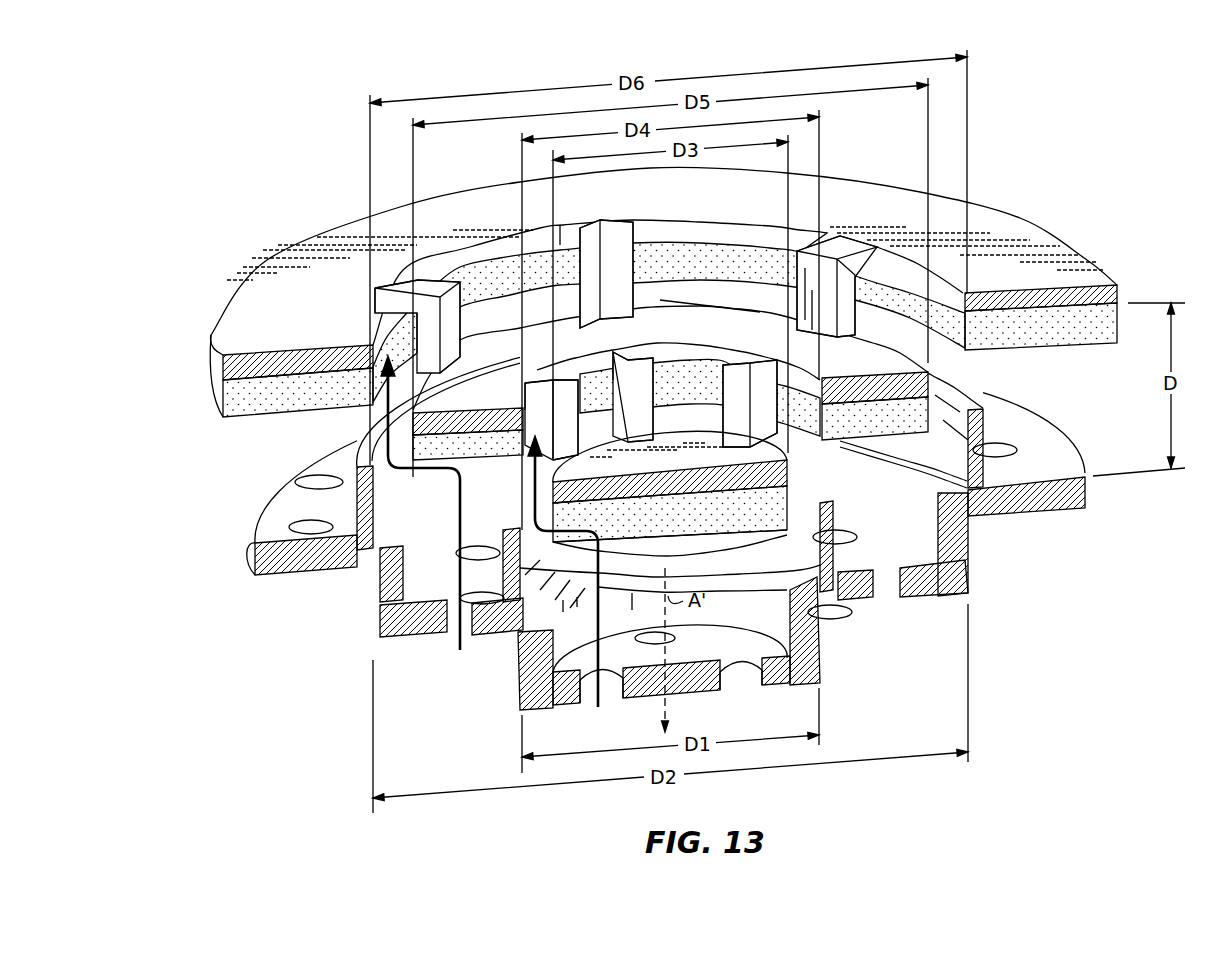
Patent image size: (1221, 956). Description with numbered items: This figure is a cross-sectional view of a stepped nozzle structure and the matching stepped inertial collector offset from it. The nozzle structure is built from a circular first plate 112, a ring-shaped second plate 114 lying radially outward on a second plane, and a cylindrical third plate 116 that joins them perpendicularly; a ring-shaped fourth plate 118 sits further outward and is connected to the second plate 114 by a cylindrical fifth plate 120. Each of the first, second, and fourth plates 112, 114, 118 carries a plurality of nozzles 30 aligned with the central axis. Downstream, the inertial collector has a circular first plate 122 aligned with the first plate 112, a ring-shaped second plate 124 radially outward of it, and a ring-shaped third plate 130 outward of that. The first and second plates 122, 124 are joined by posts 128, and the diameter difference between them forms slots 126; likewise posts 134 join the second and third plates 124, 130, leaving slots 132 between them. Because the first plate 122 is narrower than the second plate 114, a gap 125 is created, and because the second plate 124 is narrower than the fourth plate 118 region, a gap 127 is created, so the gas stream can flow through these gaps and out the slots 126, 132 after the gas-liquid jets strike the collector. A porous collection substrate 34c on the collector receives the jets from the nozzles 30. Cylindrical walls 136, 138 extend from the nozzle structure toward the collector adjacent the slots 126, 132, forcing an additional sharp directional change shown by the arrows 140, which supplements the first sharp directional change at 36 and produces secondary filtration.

The nozzles 30 is at (292, 525).
The porous collection substrate 34c is at (250, 405).
The sharp directional change 36 is at (440, 485).
The first plate 112 is at (568, 682).
The second plate 114 is at (910, 580).
The third plate 116 is at (812, 620).
The fourth plate 118 is at (1040, 452).
The fifth plate 120 is at (955, 540).
The first plate 122 is at (700, 470).
The second plate 124 is at (870, 290).
The gap 125 is at (838, 478).
The slot 126 is at (686, 395).
The gap 127 is at (948, 395).
The posts 128 is at (640, 358).
The third plate 130 is at (258, 312).
The slot 132 is at (748, 300).
The posts 134 is at (425, 292).
The wall 136 is at (518, 600).
The wall 138 is at (290, 487).
The arrows 140 is at (340, 460).